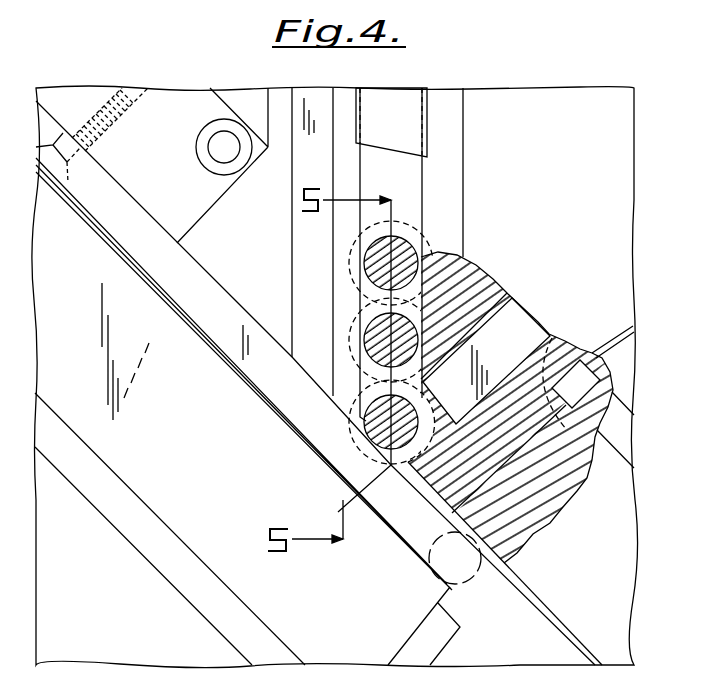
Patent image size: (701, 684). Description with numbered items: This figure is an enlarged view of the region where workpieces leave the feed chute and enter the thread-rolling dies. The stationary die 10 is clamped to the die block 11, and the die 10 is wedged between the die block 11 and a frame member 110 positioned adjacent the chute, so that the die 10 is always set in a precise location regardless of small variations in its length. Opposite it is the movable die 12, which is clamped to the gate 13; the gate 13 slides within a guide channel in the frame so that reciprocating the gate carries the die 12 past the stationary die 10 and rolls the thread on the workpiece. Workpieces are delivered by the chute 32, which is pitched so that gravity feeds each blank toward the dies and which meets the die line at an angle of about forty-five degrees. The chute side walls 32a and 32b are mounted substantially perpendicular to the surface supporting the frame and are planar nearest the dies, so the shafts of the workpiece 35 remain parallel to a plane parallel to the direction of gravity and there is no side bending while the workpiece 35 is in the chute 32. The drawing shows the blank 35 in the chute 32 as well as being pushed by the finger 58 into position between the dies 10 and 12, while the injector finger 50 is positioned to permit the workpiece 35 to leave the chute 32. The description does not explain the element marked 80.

The stationary die 10 is at (581, 564).
The die block 11 is at (625, 393).
The movable die 12 is at (392, 609).
The gate 13 is at (130, 604).
The chute 32 is at (470, 105).
The chute side wall 32a is at (365, 160).
The chute side wall 32b is at (418, 172).
The workpiece 35 is at (383, 424).
The injector finger 50 is at (523, 329).
The finger 58 is at (402, 522).
The stop block 80 is at (407, 103).
The frame member 110 is at (563, 351).